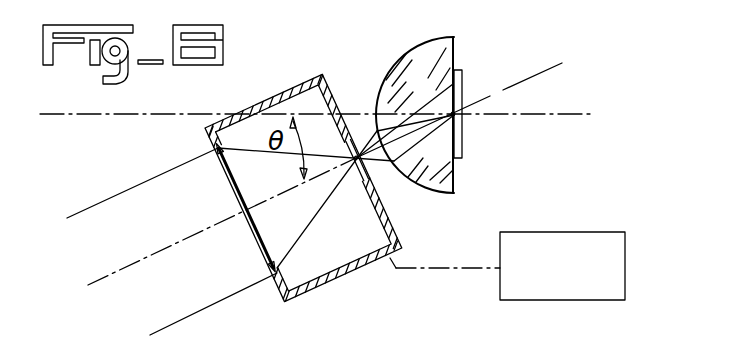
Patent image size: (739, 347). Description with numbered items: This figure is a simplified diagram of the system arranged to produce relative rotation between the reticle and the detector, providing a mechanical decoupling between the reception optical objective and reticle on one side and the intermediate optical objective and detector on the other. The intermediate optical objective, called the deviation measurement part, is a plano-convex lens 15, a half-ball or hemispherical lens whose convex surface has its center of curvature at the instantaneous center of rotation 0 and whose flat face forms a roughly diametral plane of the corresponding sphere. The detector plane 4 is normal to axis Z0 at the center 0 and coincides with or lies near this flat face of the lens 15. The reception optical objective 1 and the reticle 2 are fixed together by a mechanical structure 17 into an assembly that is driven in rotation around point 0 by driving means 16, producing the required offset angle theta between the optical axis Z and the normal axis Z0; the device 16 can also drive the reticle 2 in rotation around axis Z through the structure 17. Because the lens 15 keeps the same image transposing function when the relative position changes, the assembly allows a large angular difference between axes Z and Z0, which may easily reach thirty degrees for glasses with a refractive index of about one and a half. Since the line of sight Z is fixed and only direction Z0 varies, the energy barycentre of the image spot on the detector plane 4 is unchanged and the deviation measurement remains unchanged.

The reception optical objective 1 is at (233, 193).
The reticle 2 is at (363, 180).
The detector plane 4 is at (463, 132).
The plano-convex lens 15 is at (390, 76).
The driving means 16 is at (542, 232).
The mechanical structure 17 is at (388, 207).
The center of the detector plane 0 is at (452, 114).
The normal axis to detector plane Z0 is at (82, 114).
The optical axis Z is at (90, 287).